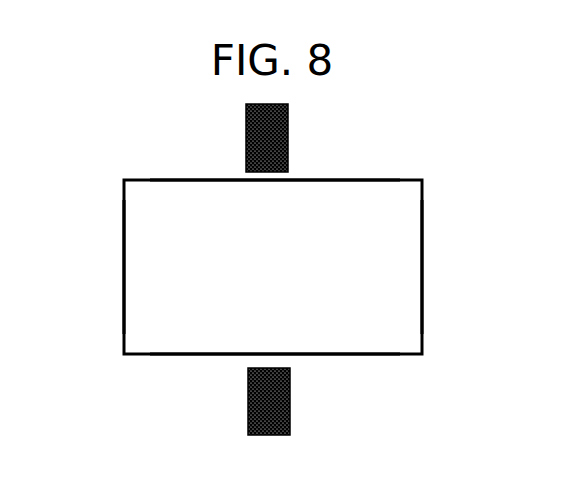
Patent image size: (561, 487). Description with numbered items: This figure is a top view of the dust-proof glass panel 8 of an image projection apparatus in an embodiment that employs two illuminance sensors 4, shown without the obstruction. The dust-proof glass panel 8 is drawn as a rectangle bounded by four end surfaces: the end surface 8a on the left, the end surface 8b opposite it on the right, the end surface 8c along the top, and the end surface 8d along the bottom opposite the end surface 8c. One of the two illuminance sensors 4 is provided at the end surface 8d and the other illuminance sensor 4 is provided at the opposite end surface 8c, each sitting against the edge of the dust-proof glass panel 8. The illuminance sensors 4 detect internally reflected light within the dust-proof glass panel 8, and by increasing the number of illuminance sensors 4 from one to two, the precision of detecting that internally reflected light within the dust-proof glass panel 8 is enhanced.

The dust-proof glass panel 8 is at (380, 182).
The end surface 8a is at (120, 278).
The end surface 8b is at (426, 262).
The end surface 8c is at (187, 177).
The end surface 8d is at (187, 357).
The illuminance sensor 4 is at (282, 134).